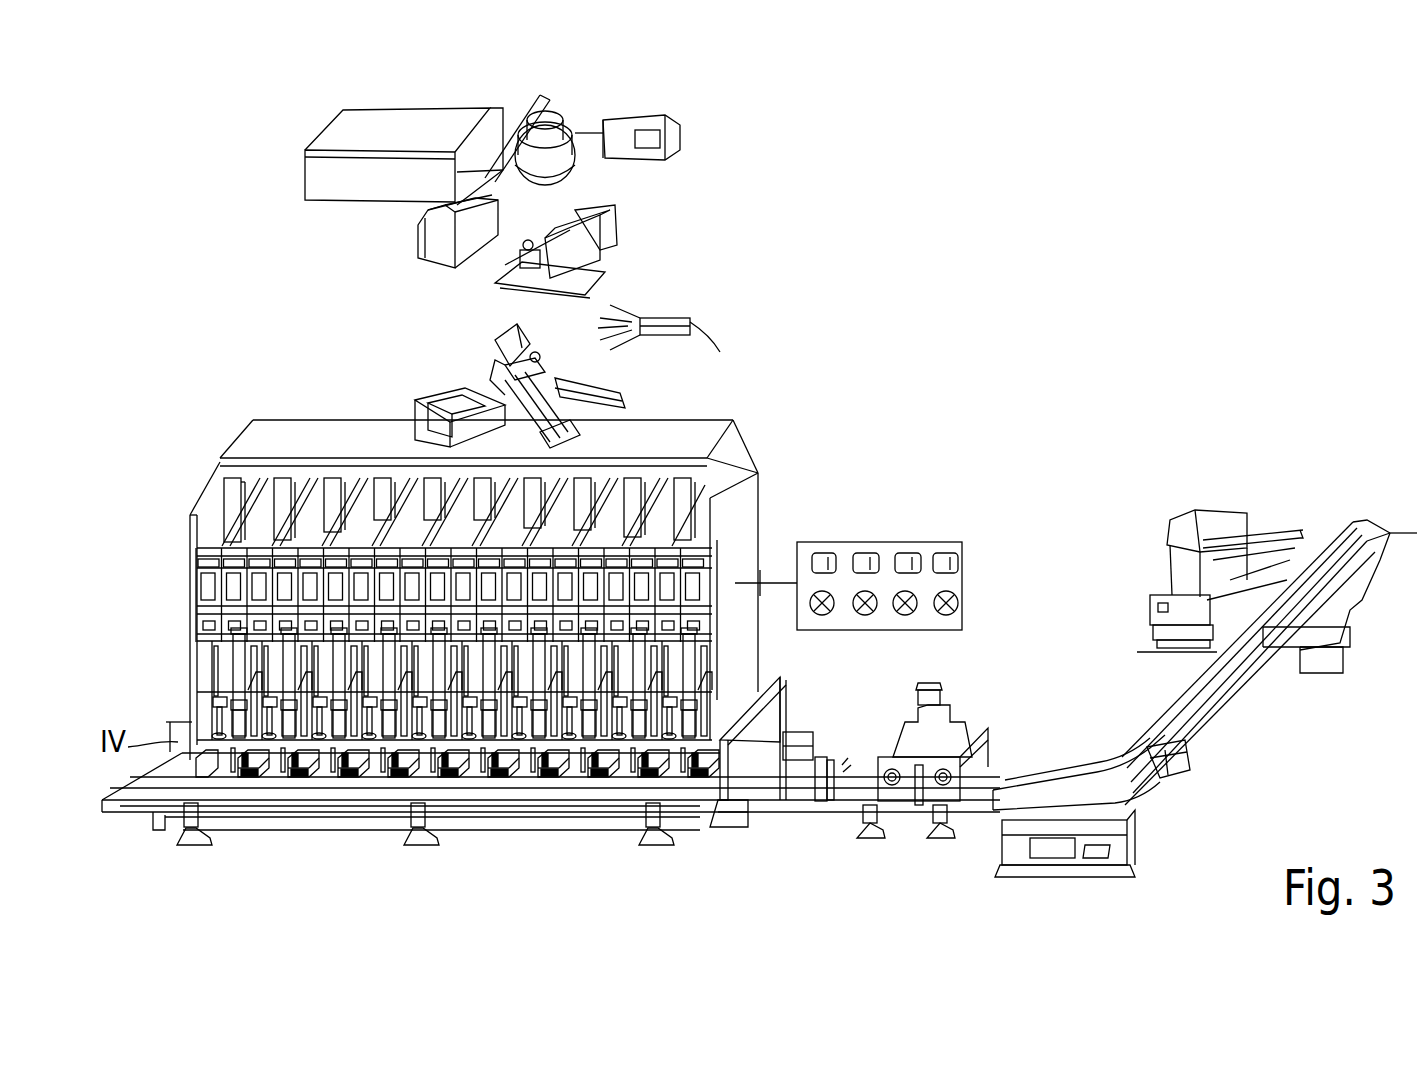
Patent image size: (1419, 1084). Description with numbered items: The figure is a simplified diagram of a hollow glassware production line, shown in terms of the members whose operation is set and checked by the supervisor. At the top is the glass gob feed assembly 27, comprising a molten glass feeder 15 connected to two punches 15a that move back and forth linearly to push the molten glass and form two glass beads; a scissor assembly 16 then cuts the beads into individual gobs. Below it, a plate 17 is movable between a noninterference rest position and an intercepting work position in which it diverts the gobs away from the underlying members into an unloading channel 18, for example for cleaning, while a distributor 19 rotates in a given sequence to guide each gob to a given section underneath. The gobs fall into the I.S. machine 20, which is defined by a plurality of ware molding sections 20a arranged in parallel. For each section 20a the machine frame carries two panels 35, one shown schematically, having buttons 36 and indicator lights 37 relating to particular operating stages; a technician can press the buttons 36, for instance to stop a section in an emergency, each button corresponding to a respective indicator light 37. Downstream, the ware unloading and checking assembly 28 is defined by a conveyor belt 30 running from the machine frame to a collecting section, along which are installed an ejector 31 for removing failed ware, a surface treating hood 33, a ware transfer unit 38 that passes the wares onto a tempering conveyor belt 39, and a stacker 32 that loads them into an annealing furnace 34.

The molten glass feeder 15 is at (413, 203).
The punches 15a is at (558, 128).
The scissor assembly 16 is at (565, 300).
The plate 17 is at (497, 345).
The unloading channel 18 is at (592, 392).
The distributor 19 is at (540, 380).
The I.S. machine 20 is at (350, 437).
The sections 20a is at (324, 470).
The glass gob feed assembly 27 is at (625, 190).
The ware unloading and checking assembly 28 is at (790, 810).
The conveyor belt 30 is at (1000, 775).
The ejector 31 is at (858, 760).
The stacker 32 is at (1250, 530).
The surface treating hood 33 is at (958, 727).
The annealing furnace 34 is at (1385, 523).
The panels 35 is at (1000, 585).
The buttons 36 is at (948, 562).
The indicator lights 37 is at (947, 615).
The ware transfer unit 38 is at (1152, 792).
The tempering conveyor belt 39 is at (1225, 705).